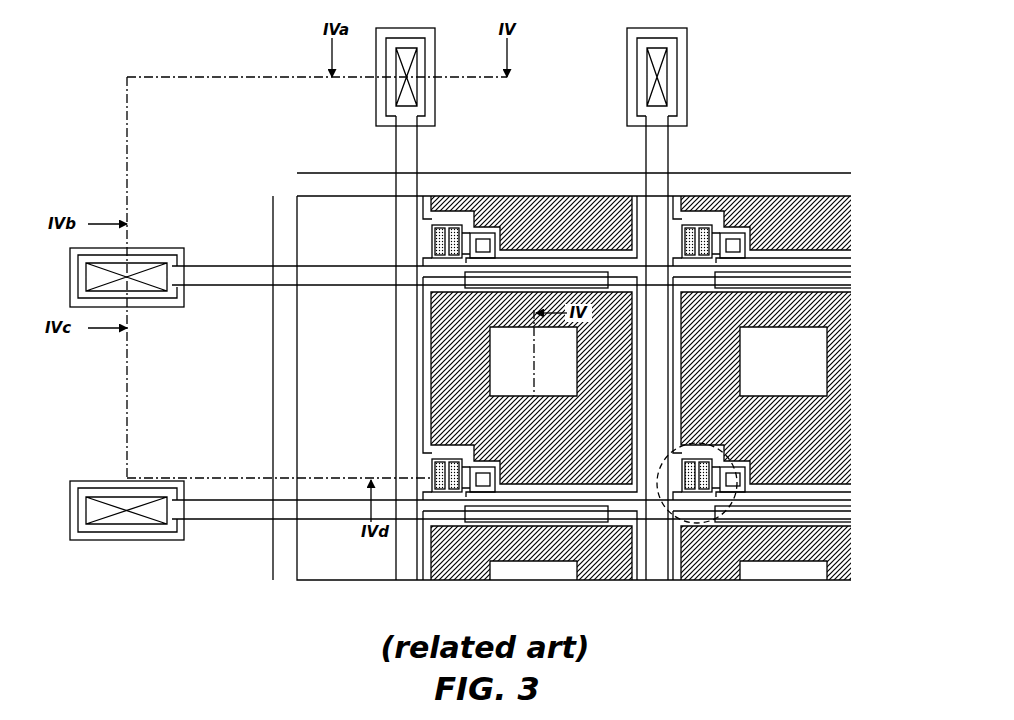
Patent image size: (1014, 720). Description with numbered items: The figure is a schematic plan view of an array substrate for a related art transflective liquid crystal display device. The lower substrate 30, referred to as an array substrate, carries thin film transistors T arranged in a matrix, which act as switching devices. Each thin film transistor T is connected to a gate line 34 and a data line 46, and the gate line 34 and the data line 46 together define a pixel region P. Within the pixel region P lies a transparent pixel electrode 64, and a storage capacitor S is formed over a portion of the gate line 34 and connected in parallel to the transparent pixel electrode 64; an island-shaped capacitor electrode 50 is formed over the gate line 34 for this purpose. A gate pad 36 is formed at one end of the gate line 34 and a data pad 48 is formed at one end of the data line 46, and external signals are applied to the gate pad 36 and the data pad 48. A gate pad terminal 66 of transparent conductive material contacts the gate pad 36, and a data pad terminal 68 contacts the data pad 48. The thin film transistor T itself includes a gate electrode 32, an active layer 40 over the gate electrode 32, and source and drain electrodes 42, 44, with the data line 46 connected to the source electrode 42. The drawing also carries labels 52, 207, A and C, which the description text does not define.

The lower substrate 30 is at (868, 190).
The gate electrode 32 is at (428, 457).
The gate line 34 is at (331, 512).
The gate pad 36 is at (144, 253).
The active layer 40 is at (703, 492).
The source electrode 42 is at (688, 472).
The drain electrode 44 is at (734, 491).
The data line 46 is at (394, 386).
The data pad 48 is at (426, 53).
The capacitor electrode 50 is at (586, 272).
The pixel electrode 52 is at (430, 310).
The transparent pixel electrode 64 is at (421, 343).
The gate pad terminal 66 is at (178, 249).
The data pad terminal 68 is at (437, 95).
The gate pad 207 is at (142, 490).
The storage capacitor S is at (457, 565).
The thin film transistor T is at (697, 500).
The pixel region P is at (858, 308).
The transmissive area A is at (820, 356).
The reflective area C is at (845, 418).